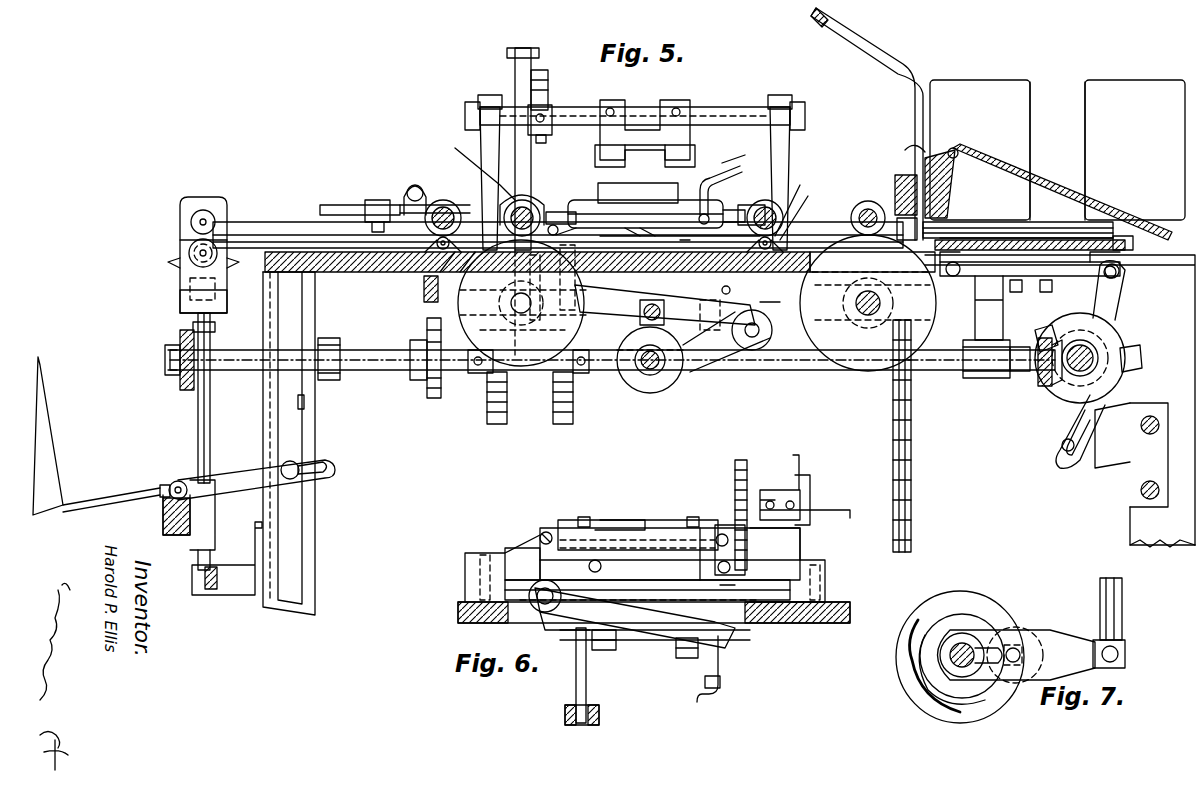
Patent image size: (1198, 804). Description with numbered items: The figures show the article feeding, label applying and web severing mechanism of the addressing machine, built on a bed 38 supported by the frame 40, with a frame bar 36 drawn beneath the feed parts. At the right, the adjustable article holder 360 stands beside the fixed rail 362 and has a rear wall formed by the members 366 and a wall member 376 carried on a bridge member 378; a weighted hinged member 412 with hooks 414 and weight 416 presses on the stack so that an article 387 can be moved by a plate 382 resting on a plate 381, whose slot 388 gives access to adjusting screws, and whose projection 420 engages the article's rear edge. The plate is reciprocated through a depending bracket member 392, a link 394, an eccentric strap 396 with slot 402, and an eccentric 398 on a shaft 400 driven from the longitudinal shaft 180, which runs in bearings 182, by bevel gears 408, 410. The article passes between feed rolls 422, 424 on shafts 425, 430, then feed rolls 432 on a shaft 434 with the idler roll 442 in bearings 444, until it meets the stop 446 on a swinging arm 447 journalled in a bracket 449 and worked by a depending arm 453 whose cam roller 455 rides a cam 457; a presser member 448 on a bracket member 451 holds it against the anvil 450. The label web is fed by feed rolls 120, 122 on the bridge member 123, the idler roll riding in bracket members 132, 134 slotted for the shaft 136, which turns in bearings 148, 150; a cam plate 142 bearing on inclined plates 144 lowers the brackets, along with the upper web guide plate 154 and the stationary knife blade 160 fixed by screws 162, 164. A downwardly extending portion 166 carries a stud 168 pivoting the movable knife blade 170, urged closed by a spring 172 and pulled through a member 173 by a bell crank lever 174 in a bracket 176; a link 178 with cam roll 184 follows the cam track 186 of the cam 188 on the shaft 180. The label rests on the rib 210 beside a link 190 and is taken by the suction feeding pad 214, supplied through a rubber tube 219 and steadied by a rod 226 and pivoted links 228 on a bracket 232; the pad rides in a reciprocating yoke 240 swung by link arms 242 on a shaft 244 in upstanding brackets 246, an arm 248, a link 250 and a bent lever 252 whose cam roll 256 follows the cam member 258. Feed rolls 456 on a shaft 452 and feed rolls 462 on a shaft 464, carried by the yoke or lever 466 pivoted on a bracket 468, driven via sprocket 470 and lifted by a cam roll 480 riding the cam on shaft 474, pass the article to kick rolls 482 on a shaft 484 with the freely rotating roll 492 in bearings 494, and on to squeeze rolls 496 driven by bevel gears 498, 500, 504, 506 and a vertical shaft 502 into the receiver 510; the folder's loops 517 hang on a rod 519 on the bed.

In FIG. 5, the frame bar 36 is at (680, 242).
In FIG. 6, the frame bar 36 is at (647, 580).
In FIG. 5, the bed 38 is at (350, 272).
In FIG. 6, the bed 38 is at (848, 600).
In FIG. 5, the frame 40 is at (315, 512).
In FIG. 6, the feed roll 120 is at (638, 600).
In FIG. 6, the feed roll 122 is at (642, 530).
In FIG. 6, the bridge member 123 is at (512, 550).
In FIG. 6, the bracket member 132 is at (555, 525).
In FIG. 6, the bracket member 134 is at (712, 550).
In FIG. 6, the shaft 136 is at (660, 545).
In FIG. 6, the cam plate 142 is at (640, 520).
In FIG. 6, the inclined plates 144 is at (580, 517).
In FIG. 6, the bearing 148 is at (545, 530).
In FIG. 6, the bearing 150 is at (748, 545).
In FIG. 6, the upper web guide plate 154 is at (735, 588).
In FIG. 6, the stationary knife blade 160 is at (700, 548).
In FIG. 6, the screw 162 is at (597, 560).
In FIG. 6, the screw 164 is at (738, 572).
In FIG. 6, the downwardly extending portion 166 is at (530, 568).
In FIG. 6, the stud 168 is at (535, 603).
In FIG. 6, the movable knife blade 170 is at (665, 630).
In FIG. 6, the spring 172 is at (555, 618).
In FIG. 5, the member 173 is at (704, 315).
In FIG. 6, the member 173 is at (722, 674).
In FIG. 5, the bell crank lever 174 is at (582, 318).
In FIG. 6, the bell crank lever 174 is at (586, 683).
In FIG. 7, the bell crank lever 174 is at (1100, 590).
In FIG. 5, the bracket 176 is at (640, 305).
In FIG. 6, the bracket 176 is at (594, 648).
In FIG. 5, the link 178 is at (581, 376).
In FIG. 6, the link 178 is at (564, 713).
In FIG. 7, the link 178 is at (1052, 636).
In FIG. 5, the shaft 180 is at (375, 350).
In FIG. 7, the shaft 180 is at (965, 648).
In FIG. 5, the bearings 182 is at (340, 340).
In FIG. 7, the cam roll 184 is at (1022, 625).
In FIG. 7, the cam track 186 is at (918, 682).
In FIG. 5, the cam 188 is at (573, 420).
In FIG. 7, the cam 188 is at (897, 652).
In FIG. 5, the link 190 is at (568, 238).
In FIG. 5, the rib 210 is at (696, 241).
In FIG. 5, the suction feeding pad 214 is at (600, 210).
In FIG. 5, the rubber tube 219 is at (705, 168).
In FIG. 5, the rod 226 is at (708, 205).
In FIG. 5, the pivoted links 228 is at (745, 205).
In FIG. 5, the bracket 232 is at (765, 200).
In FIG. 5, the reciprocating yoke 240 is at (712, 184).
In FIG. 5, the link arms 242 is at (675, 137).
In FIG. 5, the shaft 244 is at (703, 107).
In FIG. 5, the upstanding brackets 246 is at (478, 165).
In FIG. 5, the arm 248 is at (552, 95).
In FIG. 5, the link 250 is at (535, 65).
In FIG. 5, the bent lever 252 is at (531, 160).
In FIG. 5, the cam roll 256 is at (508, 374).
In FIG. 5, the cam member 258 is at (490, 392).
In FIG. 5, the adjustable article holder 360 is at (1090, 76).
In FIG. 5, the rail 362 is at (828, 224).
In FIG. 5, the members 366 is at (970, 87).
In FIG. 5, the wall member 376 is at (915, 115).
In FIG. 5, the bridge member 378 is at (905, 172).
In FIG. 5, the plate 381 is at (1058, 232).
In FIG. 5, the plate 382 is at (1098, 240).
In FIG. 5, the article 387 is at (985, 222).
In FIG. 5, the slot 388 is at (1128, 252).
In FIG. 5, the bracket member 392 is at (962, 268).
In FIG. 5, the link 394 is at (1030, 278).
In FIG. 5, the eccentric strap 396 is at (1115, 300).
In FIG. 5, the eccentric 398 is at (1100, 340).
In FIG. 5, the shaft 400 is at (1142, 350).
In FIG. 5, the slot 402 is at (1073, 405).
In FIG. 5, the bevel gear 408 is at (1058, 385).
In FIG. 5, the bevel gear 410 is at (1040, 385).
In FIG. 5, the weighted hinged member 412 is at (988, 160).
In FIG. 5, the hooks 414 is at (903, 152).
In FIG. 5, the weight 416 is at (945, 155).
In FIG. 5, the projection 420 is at (1128, 238).
In FIG. 5, the feed roll 422 is at (868, 200).
In FIG. 5, the feed roll 424 is at (866, 362).
In FIG. 5, the shaft 425 is at (858, 213).
In FIG. 5, the shaft 430 is at (882, 303).
In FIG. 5, the feed rolls 432 is at (801, 198).
In FIG. 5, the shaft 434 is at (806, 207).
In FIG. 5, the idler roll 442 is at (828, 265).
In FIG. 5, the bearings 444 is at (732, 292).
In FIG. 5, the stop 446 is at (515, 200).
In FIG. 5, the swinging arm 447 is at (404, 205).
In FIG. 5, the guide or presser member 448 is at (638, 193).
In FIG. 5, the bracket 449 is at (430, 205).
In FIG. 5, the anvil 450 is at (630, 228).
In FIG. 5, the bracket member 451 is at (550, 210).
In FIG. 5, the shaft 452 is at (479, 163).
In FIG. 5, the depending arm 453 is at (424, 290).
In FIG. 5, the cam roller 455 is at (426, 336).
In FIG. 5, the feed rolls 456 is at (522, 206).
In FIG. 5, the cam 457 is at (425, 388).
In FIG. 5, the feed rolls 462 is at (523, 303).
In FIG. 5, the shaft 464 is at (511, 300).
In FIG. 5, the yoke or lever 466 is at (728, 345).
In FIG. 5, the bracket 468 is at (768, 300).
In FIG. 5, the sprocket 470 is at (843, 308).
In FIG. 5, the shaft 474 is at (645, 368).
In FIG. 5, the cam roll 480 is at (643, 368).
In FIG. 5, the feed rolls 482 is at (446, 200).
In FIG. 5, the shaft 484 is at (413, 271).
In FIG. 5, the freely rotating roll 492 is at (426, 277).
In FIG. 5, the bearings 494 is at (452, 250).
In FIG. 5, the squeeze rolls 496 is at (180, 232).
In FIG. 5, the bevel gear 498 is at (182, 340).
In FIG. 5, the bevel gear 500 is at (215, 332).
In FIG. 5, the vertical shaft 502 is at (182, 308).
In FIG. 5, the bevel gear 504 is at (175, 264).
In FIG. 5, the bevel gear 506 is at (222, 240).
In FIG. 5, the receiver 510 is at (63, 483).
In FIG. 5, the loops 517 is at (540, 287).
In FIG. 5, the rod 519 is at (561, 277).